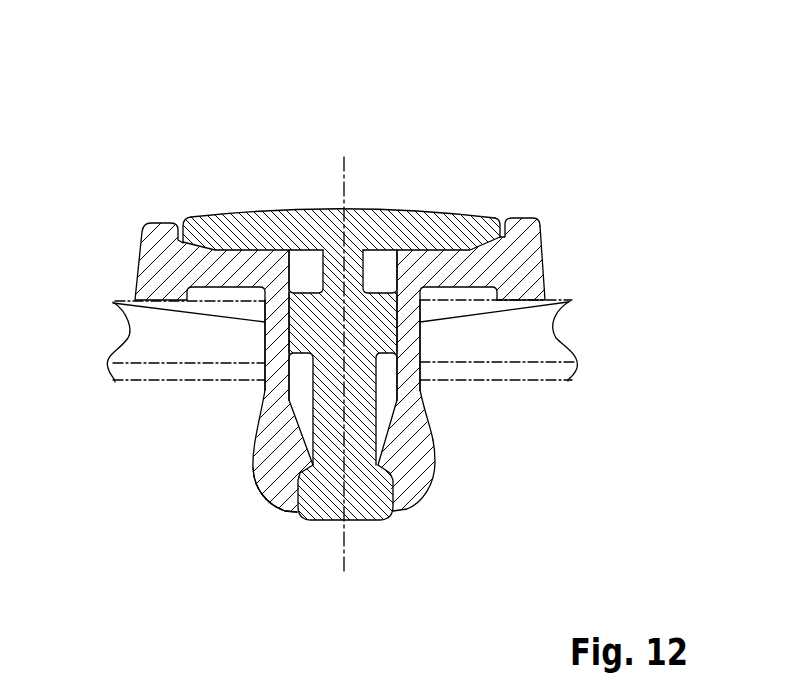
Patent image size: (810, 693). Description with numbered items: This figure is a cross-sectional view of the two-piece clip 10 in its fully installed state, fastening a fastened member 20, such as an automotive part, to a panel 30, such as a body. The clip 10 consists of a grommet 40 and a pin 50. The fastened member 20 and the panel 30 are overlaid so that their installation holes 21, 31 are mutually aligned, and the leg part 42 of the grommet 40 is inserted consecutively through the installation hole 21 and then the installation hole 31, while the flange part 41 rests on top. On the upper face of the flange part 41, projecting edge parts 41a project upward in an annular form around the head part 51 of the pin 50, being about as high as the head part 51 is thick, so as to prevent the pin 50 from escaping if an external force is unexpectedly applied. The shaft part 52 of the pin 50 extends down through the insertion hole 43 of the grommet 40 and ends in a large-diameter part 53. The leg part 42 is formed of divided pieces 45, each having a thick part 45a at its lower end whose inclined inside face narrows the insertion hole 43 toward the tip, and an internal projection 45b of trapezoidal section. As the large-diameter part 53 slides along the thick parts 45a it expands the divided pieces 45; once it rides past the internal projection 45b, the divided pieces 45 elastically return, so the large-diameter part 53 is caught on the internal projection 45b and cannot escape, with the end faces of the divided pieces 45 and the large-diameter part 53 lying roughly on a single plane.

The two-piece clip 10 is at (127, 82).
The fastened member 20 is at (133, 338).
The installation hole 21 is at (133, 302).
The panel 30 is at (110, 378).
The installation hole 31 is at (262, 382).
The grommet 40 is at (405, 355).
The flange part 41 is at (547, 270).
The projecting edge parts 41a is at (522, 218).
The leg part 42 is at (547, 515).
The insertion hole 43 is at (300, 213).
The divided pieces 45 is at (262, 493).
The thick part 45a is at (432, 467).
The internal projection 45b is at (432, 422).
The pin 50 is at (405, 352).
The head part 51 is at (400, 215).
The shaft part 52 is at (572, 301).
The large-diameter part 53 is at (335, 522).